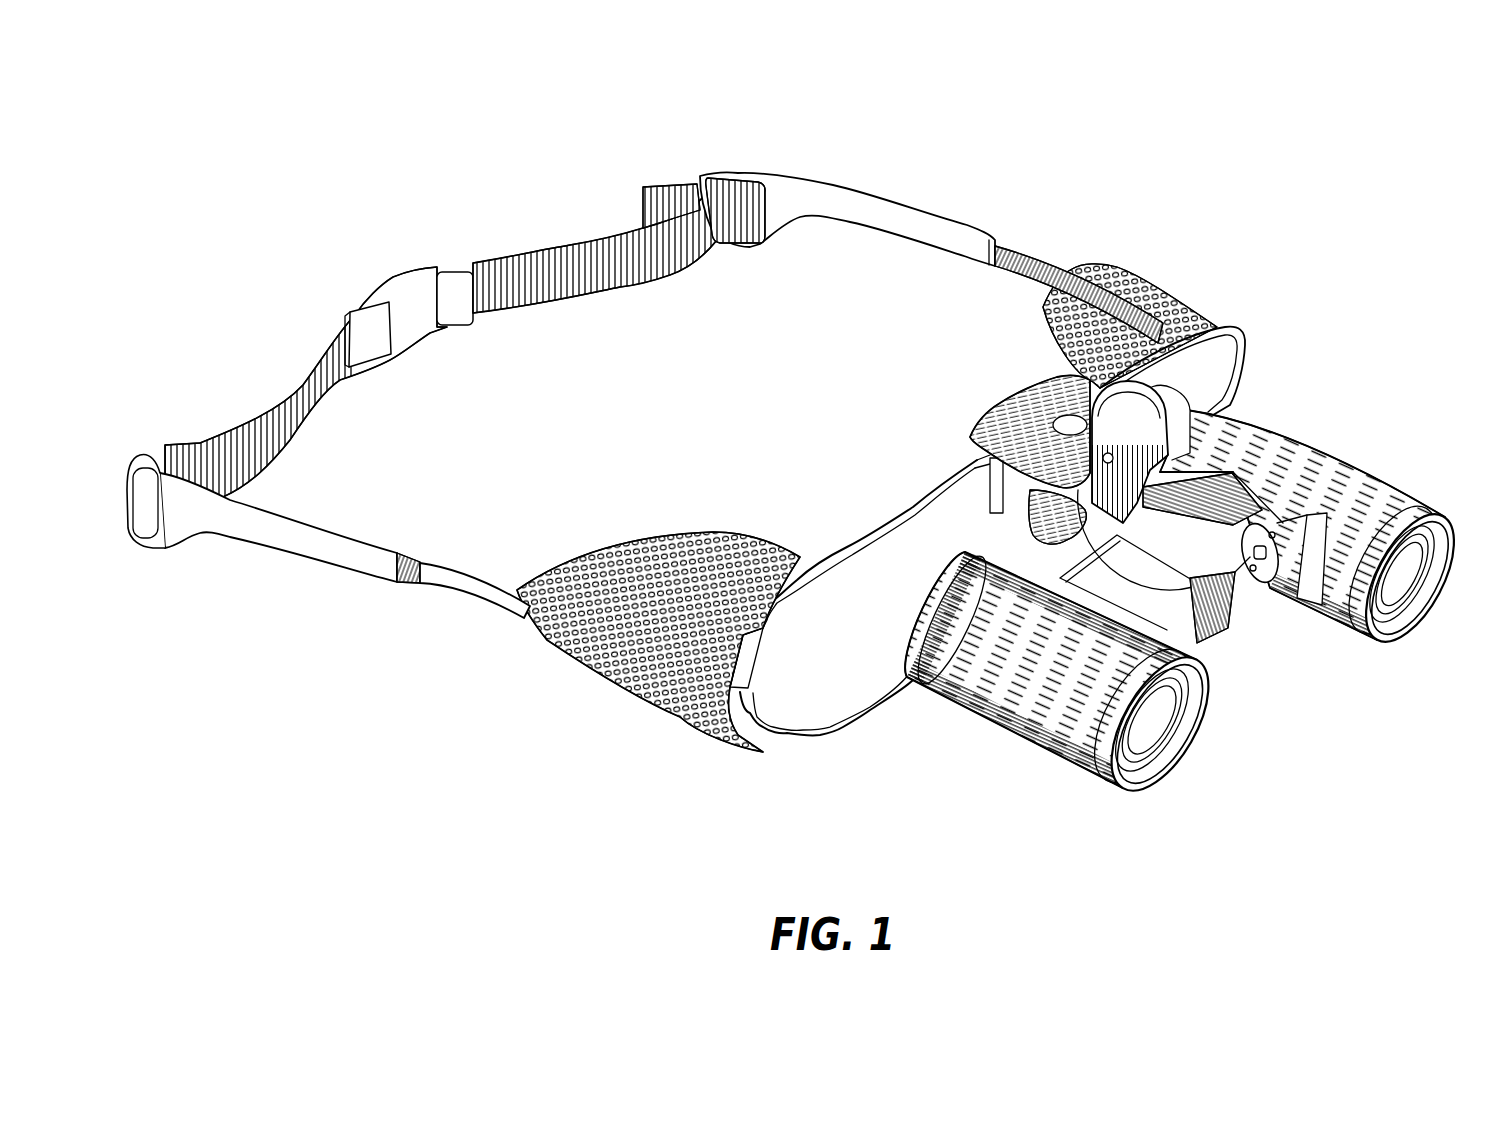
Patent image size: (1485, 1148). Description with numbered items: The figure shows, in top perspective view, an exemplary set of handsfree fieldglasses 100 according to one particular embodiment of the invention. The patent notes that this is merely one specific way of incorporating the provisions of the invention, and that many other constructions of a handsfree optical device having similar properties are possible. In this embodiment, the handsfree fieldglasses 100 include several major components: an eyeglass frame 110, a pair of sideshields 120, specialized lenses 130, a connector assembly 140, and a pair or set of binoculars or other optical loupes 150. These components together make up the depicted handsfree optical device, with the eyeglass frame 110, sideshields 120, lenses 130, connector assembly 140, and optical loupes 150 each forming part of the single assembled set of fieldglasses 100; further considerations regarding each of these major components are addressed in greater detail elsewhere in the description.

The handsfree fieldglasses 100 is at (799, 455).
The eyeglass frame 110 is at (460, 582).
The pair of sideshields 120 is at (660, 667).
The specialized lenses 130 is at (853, 690).
The connector assembly 140 is at (1147, 393).
The binoculars or other optical loupes 150 is at (1075, 760).